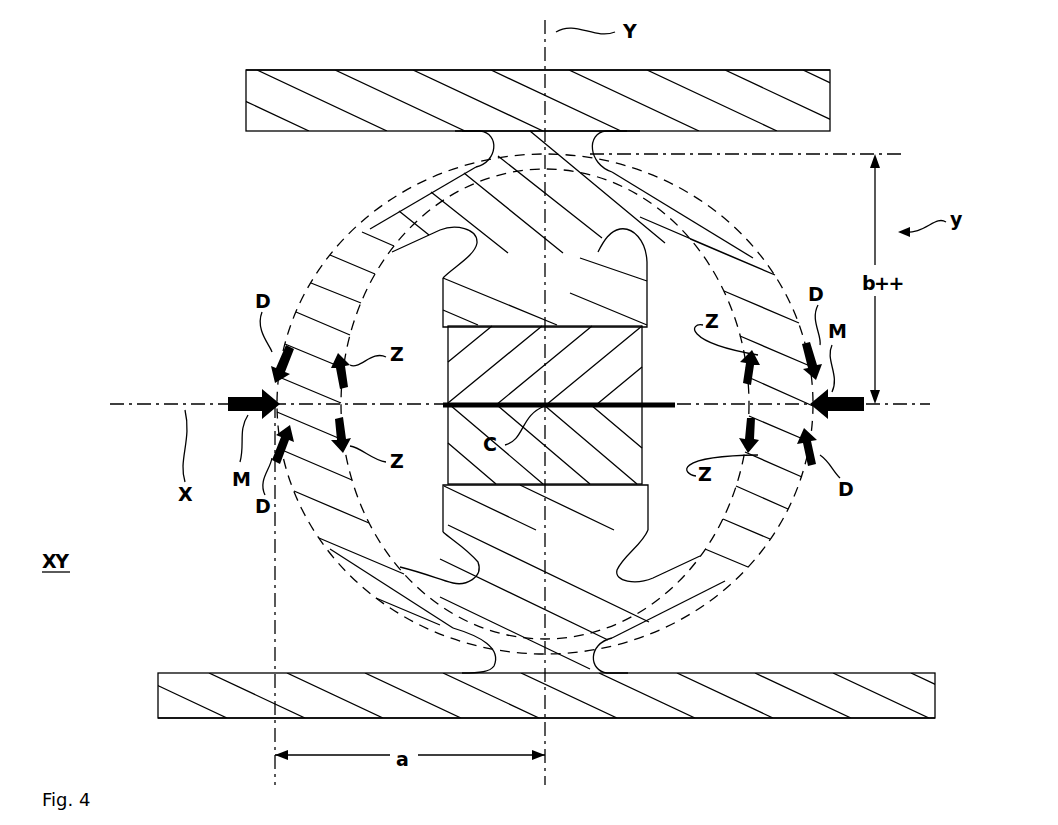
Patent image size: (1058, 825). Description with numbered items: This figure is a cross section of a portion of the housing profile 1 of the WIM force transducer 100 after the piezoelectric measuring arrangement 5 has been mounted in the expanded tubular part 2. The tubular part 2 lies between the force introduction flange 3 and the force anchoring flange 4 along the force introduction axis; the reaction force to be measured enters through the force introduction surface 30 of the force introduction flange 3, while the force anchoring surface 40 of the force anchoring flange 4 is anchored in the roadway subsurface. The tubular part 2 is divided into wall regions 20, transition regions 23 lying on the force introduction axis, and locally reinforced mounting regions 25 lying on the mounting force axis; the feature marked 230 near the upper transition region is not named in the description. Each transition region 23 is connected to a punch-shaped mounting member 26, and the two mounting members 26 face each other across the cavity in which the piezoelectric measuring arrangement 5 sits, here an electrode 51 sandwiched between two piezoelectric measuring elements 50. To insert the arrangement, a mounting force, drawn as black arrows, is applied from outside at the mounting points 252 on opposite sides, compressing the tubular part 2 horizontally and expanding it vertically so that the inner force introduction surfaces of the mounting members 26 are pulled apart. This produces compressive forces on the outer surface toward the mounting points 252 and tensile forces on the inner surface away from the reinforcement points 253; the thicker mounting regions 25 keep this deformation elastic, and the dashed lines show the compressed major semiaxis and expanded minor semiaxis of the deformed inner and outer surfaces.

The housing profile 1 is at (160, 126).
The piezoelectric measuring arrangement 5 is at (160, 126).
The WIM force transducer 100 is at (160, 126).
The tubular part 2 is at (275, 268).
The force introduction flange 3 is at (832, 97).
The force anchoring flange 4 is at (836, 685).
The wall regions 20 is at (352, 220).
The transition regions 23 is at (472, 146).
The mounting regions 25 is at (330, 466).
The mounting member 26 is at (562, 284).
The force introduction surface 30 is at (410, 68).
The force anchoring surface 40 is at (738, 718).
The piezoelectric measuring element 50 is at (650, 322).
The electrode 51 is at (648, 374).
The contact surface of upper plate 230 is at (522, 158).
The mounting point 252 is at (270, 392).
The reinforcement point 253 is at (340, 405).